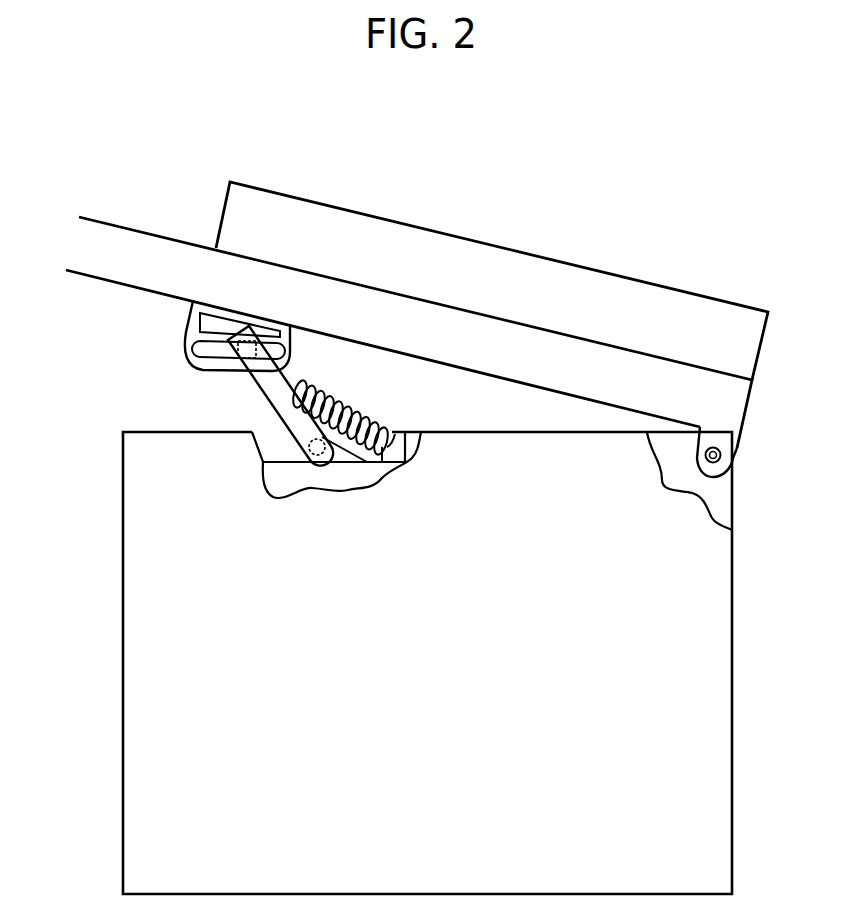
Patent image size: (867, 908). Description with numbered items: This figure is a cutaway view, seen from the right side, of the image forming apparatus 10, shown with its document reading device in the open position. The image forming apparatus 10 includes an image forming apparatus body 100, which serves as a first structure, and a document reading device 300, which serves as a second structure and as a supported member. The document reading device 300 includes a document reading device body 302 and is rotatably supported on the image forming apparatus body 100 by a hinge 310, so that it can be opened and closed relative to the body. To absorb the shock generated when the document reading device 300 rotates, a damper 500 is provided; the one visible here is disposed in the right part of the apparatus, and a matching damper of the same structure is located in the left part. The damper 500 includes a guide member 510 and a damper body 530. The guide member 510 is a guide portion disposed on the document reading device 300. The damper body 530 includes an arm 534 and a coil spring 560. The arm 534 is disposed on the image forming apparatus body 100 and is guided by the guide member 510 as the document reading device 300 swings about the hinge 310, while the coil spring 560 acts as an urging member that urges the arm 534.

The image forming apparatus 10 is at (645, 160).
The image forming apparatus body 100 is at (123, 542).
The document reading device 300 is at (217, 200).
The document reading device body 302 is at (80, 238).
The hinge 310 is at (722, 455).
The damper 500 is at (158, 362).
The guide member 510 is at (188, 323).
The damper body 530 is at (249, 397).
The arm 534 is at (283, 407).
The coil spring 560 is at (363, 411).